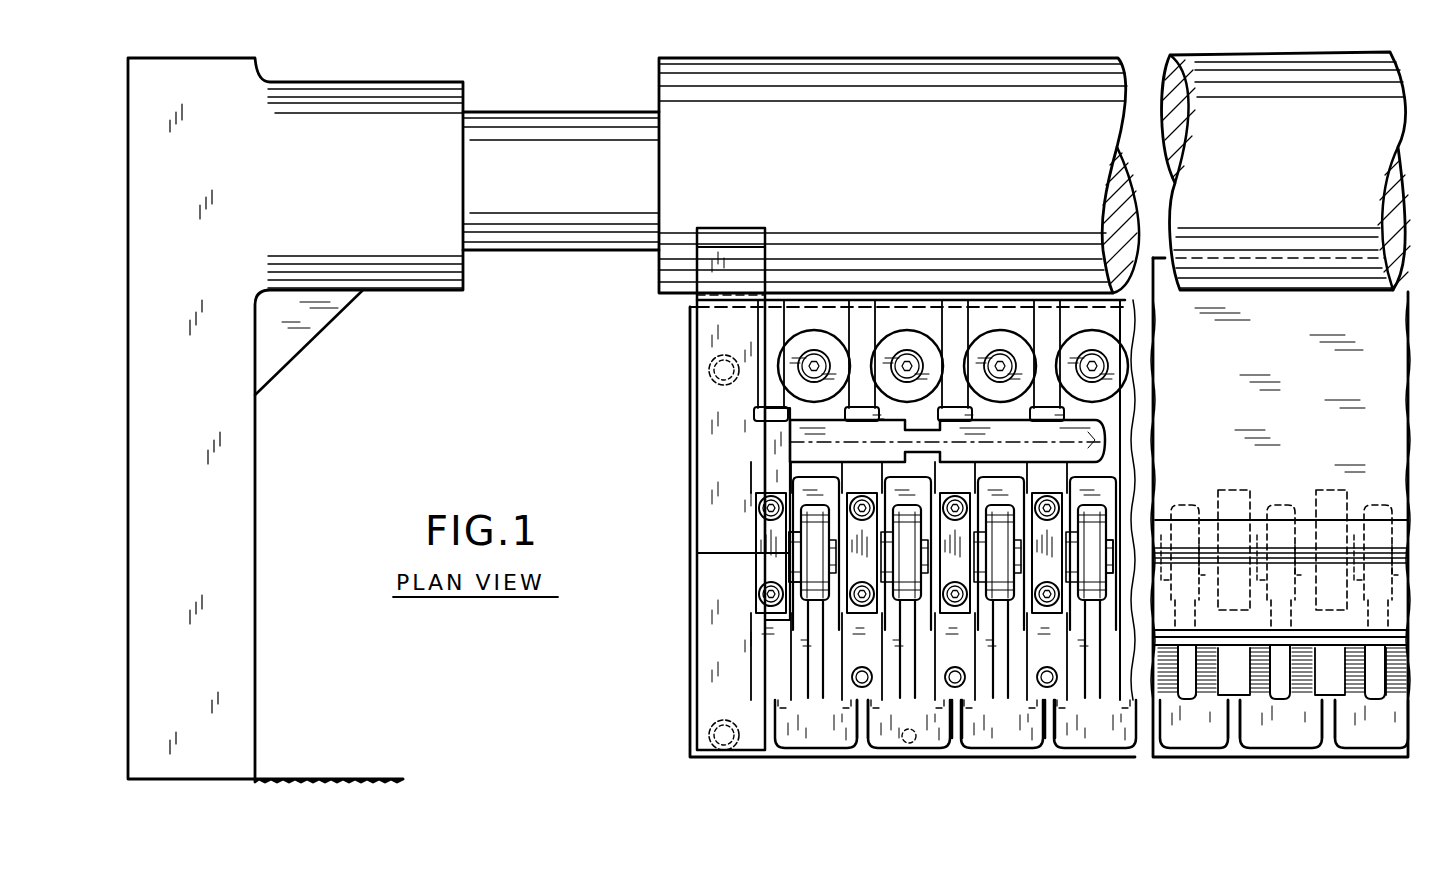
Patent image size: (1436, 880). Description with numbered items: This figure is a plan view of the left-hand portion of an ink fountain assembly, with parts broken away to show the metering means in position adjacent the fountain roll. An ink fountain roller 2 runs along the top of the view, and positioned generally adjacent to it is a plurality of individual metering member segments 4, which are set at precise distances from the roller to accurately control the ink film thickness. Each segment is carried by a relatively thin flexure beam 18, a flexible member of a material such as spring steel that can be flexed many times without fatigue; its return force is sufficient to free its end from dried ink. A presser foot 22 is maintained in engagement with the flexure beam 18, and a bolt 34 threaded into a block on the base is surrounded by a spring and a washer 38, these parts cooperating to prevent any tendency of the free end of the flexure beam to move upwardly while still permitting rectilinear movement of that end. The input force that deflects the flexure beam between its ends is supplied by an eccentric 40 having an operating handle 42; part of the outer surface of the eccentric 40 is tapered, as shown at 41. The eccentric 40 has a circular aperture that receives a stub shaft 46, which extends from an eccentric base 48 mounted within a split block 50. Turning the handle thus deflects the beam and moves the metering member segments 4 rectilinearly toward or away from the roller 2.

The ink fountain roller 2 is at (943, 188).
The metering member segments 4 is at (925, 322).
The flexure beam 18 is at (1105, 435).
The presser foot 22 is at (800, 628).
The bolt 34 is at (814, 360).
The washer 38 is at (1112, 360).
The eccentric 40 is at (812, 525).
The tapered outer surface 41 is at (795, 575).
The operating handle 42 is at (815, 740).
The stub shaft 46 is at (1110, 548).
The eccentric base 48 is at (795, 548).
The split block 50 is at (966, 614).